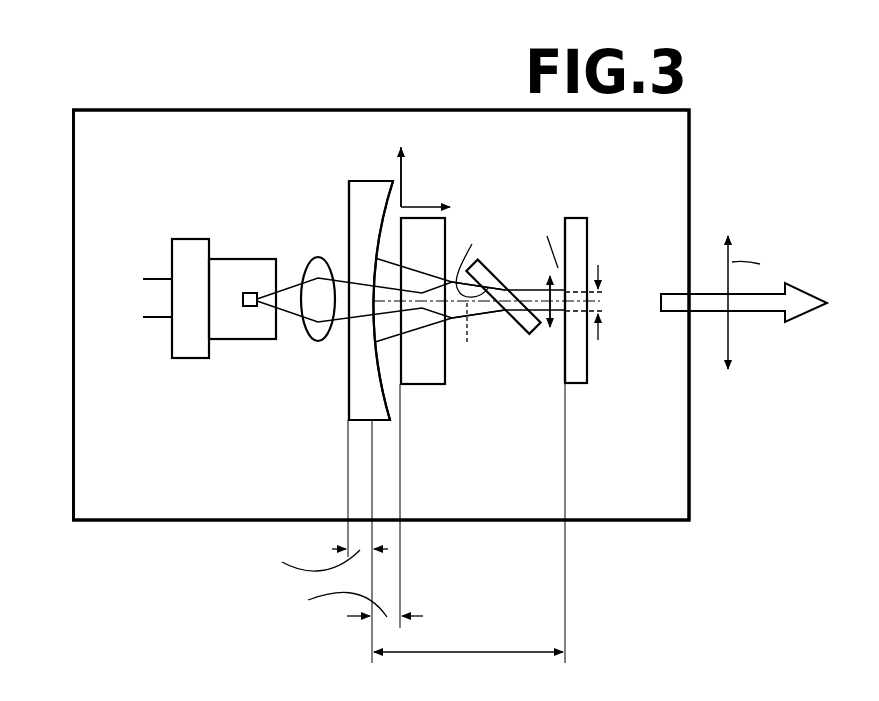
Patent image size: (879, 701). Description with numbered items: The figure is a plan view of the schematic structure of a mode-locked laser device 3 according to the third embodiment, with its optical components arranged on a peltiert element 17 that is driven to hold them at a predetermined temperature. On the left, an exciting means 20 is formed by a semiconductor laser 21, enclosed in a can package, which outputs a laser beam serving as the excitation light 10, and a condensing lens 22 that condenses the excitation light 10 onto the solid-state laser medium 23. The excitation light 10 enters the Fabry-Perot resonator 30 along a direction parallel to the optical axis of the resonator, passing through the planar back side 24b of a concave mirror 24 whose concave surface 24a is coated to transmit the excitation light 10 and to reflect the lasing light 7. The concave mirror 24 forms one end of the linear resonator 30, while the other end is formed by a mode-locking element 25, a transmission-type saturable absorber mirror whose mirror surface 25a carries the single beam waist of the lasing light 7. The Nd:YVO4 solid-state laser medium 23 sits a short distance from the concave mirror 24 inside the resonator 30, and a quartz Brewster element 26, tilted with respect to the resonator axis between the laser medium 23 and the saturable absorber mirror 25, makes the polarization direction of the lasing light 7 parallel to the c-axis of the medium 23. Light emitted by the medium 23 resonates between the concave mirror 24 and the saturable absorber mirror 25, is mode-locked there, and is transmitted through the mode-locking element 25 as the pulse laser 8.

The mode-locked laser device 3 is at (93, 49).
The peltiert element 17 is at (690, 146).
The exciting means 20 is at (236, 200).
The semiconductor laser 21 is at (250, 293).
The condensing lens 22 is at (318, 257).
The excitation light 10 is at (302, 327).
The Fabry-Perot resonator 30 is at (505, 187).
The concave mirror 24 is at (366, 180).
The concave surface 24a is at (390, 404).
The back side 24b is at (348, 404).
The solid-state laser medium 23 is at (446, 372).
The Brewster element 26 is at (524, 333).
The lasing light 7 is at (521, 287).
The mode-locking element 25 is at (575, 218).
The mirror surface 25a is at (563, 352).
The pulse laser 8 is at (752, 312).